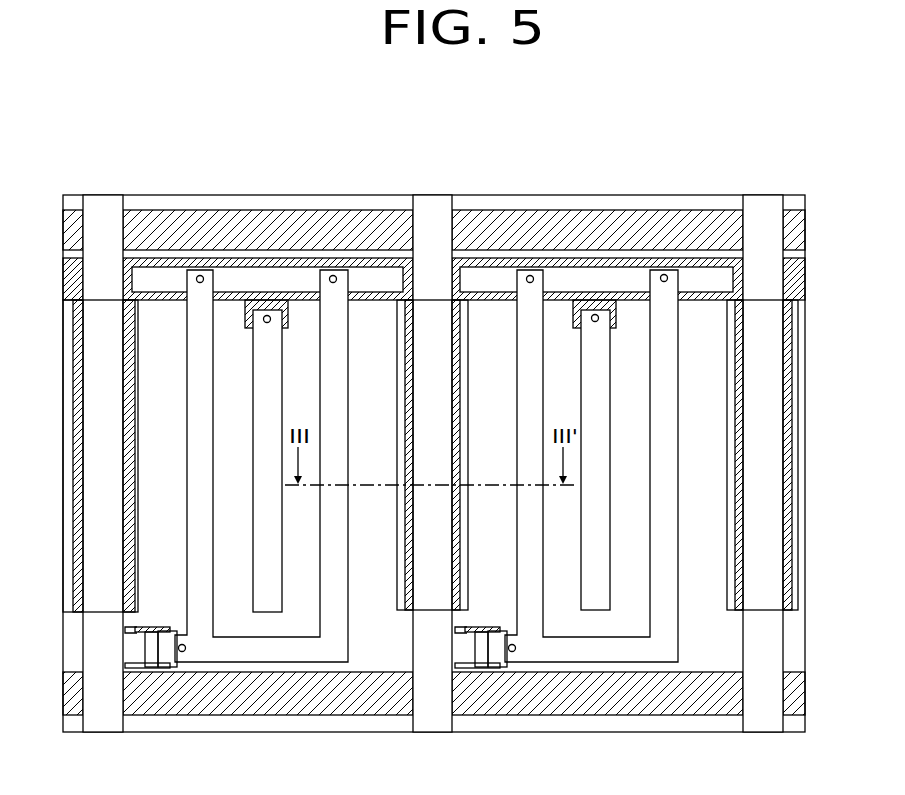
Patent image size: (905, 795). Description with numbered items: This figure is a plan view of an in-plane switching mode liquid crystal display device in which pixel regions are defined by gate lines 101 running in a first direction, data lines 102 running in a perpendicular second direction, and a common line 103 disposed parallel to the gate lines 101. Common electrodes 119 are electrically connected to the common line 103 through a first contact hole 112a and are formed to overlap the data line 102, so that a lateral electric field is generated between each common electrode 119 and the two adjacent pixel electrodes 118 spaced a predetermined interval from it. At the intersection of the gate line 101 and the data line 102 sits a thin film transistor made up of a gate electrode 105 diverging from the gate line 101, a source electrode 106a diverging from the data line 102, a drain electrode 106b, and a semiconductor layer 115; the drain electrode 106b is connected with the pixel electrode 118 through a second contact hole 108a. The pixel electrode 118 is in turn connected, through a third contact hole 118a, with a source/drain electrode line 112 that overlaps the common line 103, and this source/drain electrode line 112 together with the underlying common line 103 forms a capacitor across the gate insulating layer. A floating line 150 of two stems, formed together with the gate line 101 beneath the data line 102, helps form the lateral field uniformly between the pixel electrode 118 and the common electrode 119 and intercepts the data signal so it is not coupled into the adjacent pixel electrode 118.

The gate line 101 is at (798, 232).
The data line 102 is at (775, 640).
The common line 103 is at (798, 277).
The gate electrode 105 is at (125, 627).
The source electrode 106a is at (145, 667).
The drain electrode 106b is at (166, 667).
The second contact hole 108a is at (186, 652).
The source/drain electrode line 112 is at (721, 272).
The first contact hole 112a is at (596, 312).
The semiconductor layer 115 is at (152, 669).
The pixel electrode 118 is at (668, 430).
The third contact hole 118a is at (663, 274).
The common electrode 119 is at (797, 328).
The floating line 150 is at (785, 380).